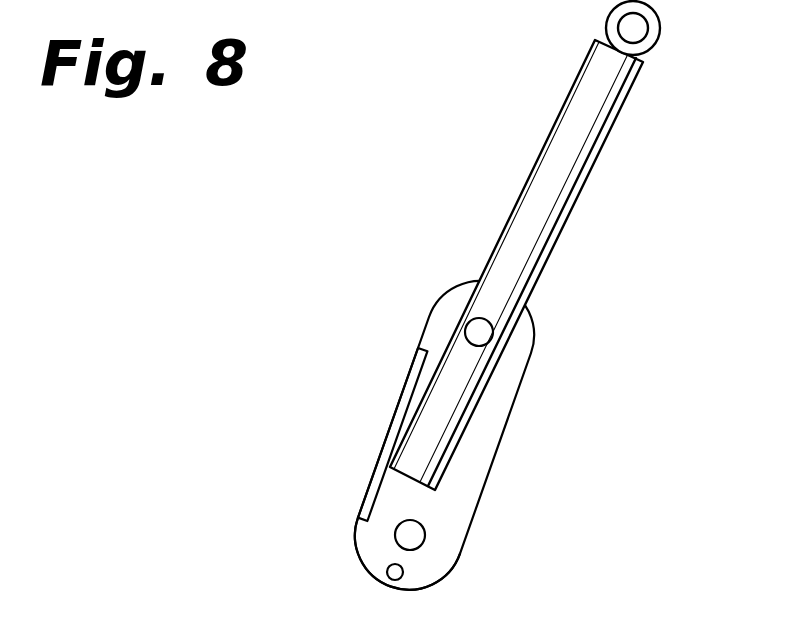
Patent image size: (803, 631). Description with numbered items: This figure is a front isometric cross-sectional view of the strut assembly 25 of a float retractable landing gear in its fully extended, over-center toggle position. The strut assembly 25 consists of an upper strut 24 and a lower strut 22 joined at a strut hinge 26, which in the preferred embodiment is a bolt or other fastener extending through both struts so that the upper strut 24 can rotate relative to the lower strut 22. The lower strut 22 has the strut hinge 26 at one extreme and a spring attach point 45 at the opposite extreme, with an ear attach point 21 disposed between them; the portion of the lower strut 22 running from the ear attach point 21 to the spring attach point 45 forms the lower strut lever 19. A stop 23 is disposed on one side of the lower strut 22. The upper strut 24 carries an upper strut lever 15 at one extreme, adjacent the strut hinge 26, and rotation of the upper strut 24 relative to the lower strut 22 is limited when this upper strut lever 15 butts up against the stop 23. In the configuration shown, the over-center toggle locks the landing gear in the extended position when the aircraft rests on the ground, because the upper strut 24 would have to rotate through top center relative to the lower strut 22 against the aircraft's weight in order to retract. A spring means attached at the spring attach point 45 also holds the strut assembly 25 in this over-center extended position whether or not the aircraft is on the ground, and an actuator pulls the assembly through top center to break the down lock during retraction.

The strut assembly 25 is at (238, 212).
The upper strut 24 is at (588, 113).
The strut hinge 26 is at (482, 333).
The upper strut lever 15 is at (437, 425).
The stop 23 is at (373, 487).
The lower strut 22 is at (485, 442).
The ear attach point 21 is at (427, 528).
The lower strut lever 19 is at (402, 560).
The spring attach point 45 is at (407, 580).